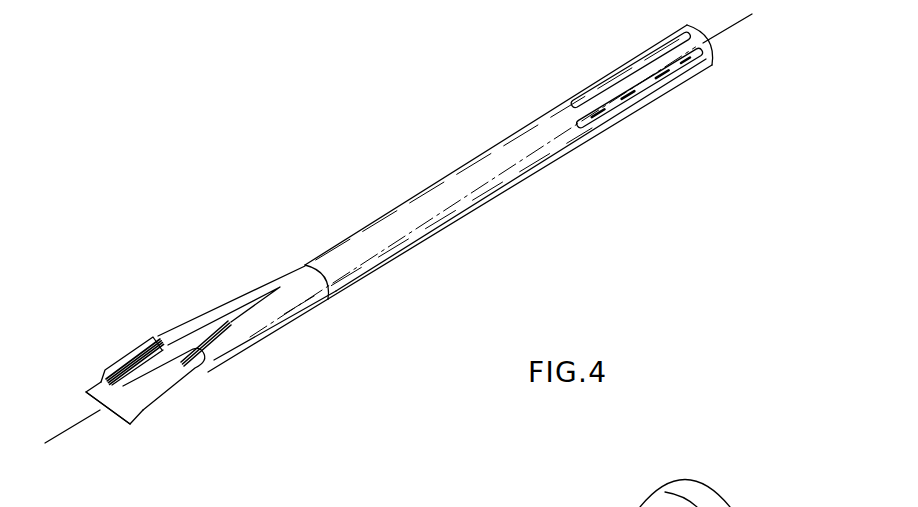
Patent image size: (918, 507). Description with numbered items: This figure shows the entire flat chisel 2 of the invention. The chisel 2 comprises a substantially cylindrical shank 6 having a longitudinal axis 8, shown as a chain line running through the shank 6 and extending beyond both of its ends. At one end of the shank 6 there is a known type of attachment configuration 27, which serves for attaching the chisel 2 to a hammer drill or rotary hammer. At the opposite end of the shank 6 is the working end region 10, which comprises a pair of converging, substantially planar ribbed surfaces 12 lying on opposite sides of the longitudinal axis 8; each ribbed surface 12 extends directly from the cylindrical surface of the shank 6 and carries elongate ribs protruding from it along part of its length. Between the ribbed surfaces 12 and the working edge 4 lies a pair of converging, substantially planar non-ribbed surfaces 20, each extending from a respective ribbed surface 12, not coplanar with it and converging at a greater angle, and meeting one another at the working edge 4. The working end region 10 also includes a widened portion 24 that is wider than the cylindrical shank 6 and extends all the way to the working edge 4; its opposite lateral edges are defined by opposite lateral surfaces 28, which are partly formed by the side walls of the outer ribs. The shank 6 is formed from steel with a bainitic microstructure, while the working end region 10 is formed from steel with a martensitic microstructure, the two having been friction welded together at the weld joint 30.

The flat chisel 2 is at (352, 185).
The working edge 4 is at (105, 408).
The shank 6 is at (483, 190).
The longitudinal axis 8 is at (742, 22).
The working end region 10 is at (331, 341).
The ribbed surface 12 is at (172, 342).
The non-ribbed surface 20 is at (97, 393).
The widened portion 24 is at (117, 343).
The attachment configuration 27 is at (658, 118).
The lateral surface 28 is at (152, 410).
The weld joint 30 is at (713, 497).